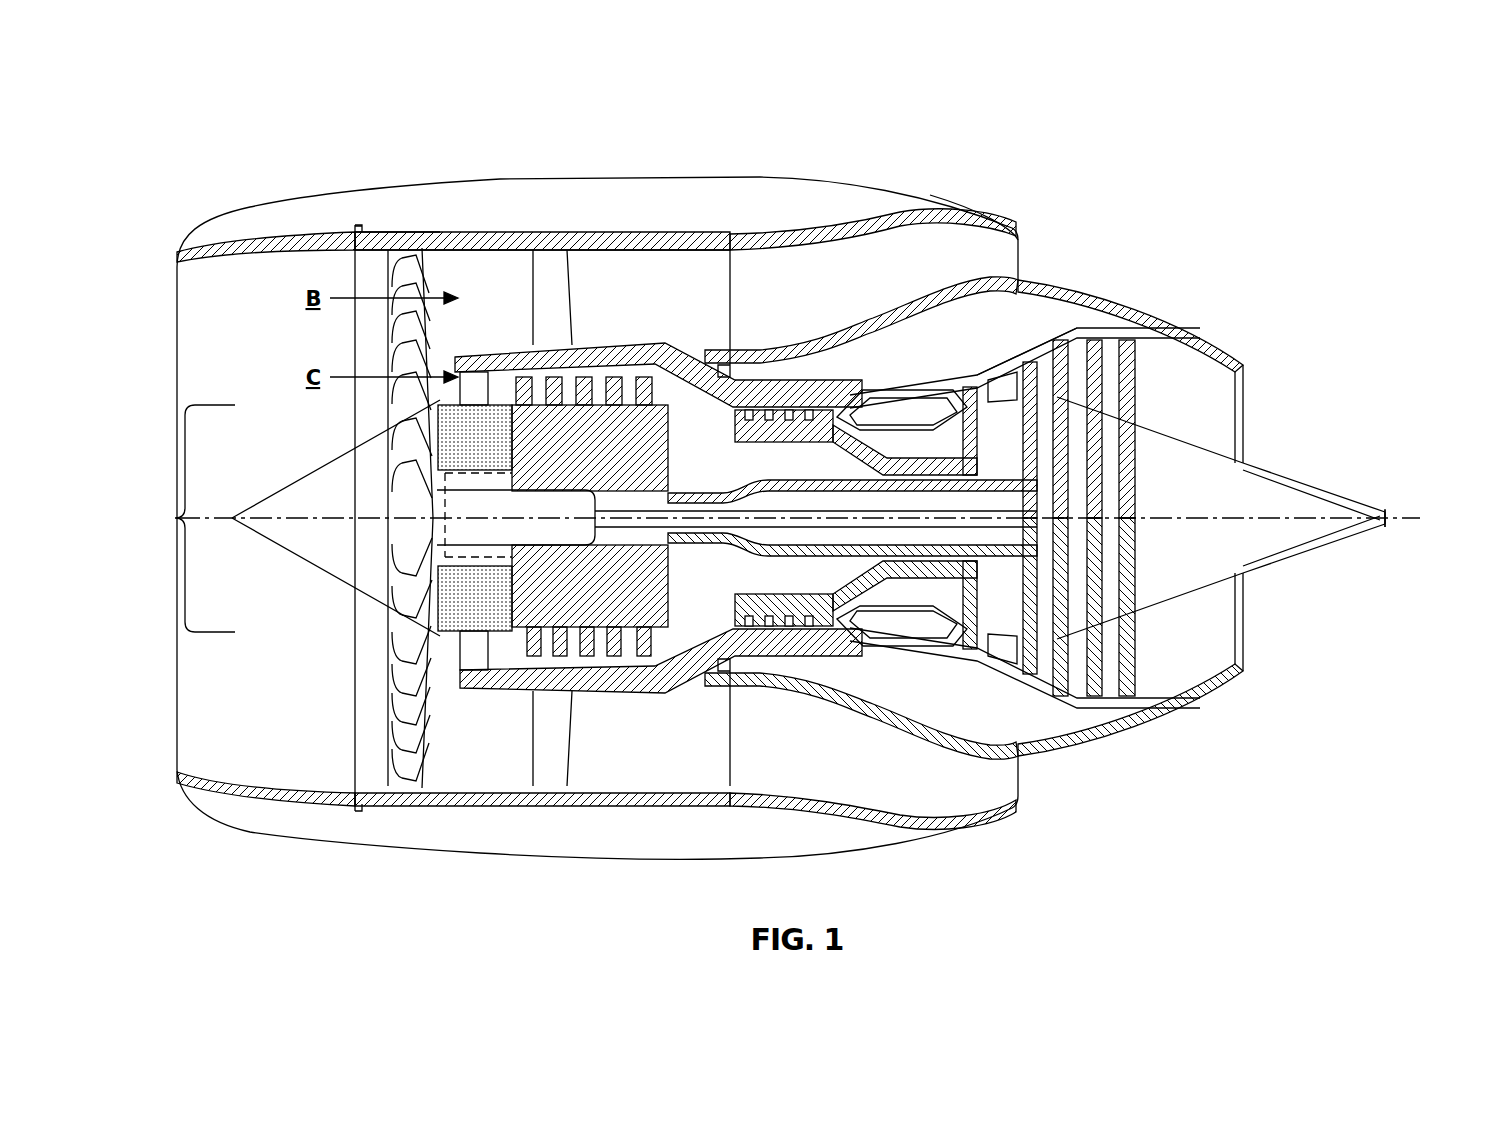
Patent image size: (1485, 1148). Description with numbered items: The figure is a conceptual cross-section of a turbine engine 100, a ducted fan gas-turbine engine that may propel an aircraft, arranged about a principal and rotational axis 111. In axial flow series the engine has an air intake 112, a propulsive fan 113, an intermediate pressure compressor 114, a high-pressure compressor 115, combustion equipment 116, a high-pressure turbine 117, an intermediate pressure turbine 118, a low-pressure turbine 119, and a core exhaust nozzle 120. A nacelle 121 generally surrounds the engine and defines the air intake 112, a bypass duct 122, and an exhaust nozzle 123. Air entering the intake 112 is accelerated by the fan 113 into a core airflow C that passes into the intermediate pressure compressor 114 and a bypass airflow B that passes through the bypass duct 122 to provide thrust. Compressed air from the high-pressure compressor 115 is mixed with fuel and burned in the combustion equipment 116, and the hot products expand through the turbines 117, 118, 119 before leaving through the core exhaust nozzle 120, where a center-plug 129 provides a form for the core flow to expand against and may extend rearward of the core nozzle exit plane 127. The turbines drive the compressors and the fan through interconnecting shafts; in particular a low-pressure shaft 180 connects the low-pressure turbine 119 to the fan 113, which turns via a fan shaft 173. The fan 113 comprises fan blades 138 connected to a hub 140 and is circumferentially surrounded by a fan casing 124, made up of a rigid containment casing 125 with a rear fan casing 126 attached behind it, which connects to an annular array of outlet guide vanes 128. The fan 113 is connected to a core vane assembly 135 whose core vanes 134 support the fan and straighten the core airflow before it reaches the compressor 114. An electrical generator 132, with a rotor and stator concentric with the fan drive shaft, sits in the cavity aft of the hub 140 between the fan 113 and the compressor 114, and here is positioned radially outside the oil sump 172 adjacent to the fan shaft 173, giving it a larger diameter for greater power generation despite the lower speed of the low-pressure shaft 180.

The turbine engine 100 is at (185, 92).
The principal and rotational axis 111 is at (1400, 518).
The air intake 112 is at (195, 360).
The propulsive fan 113 is at (372, 672).
The intermediate pressure compressor 114 is at (597, 684).
The high-pressure compressor 115 is at (783, 645).
The combustion equipment 116 is at (908, 640).
The high-pressure turbine 117 is at (965, 388).
The intermediate pressure turbine 118 is at (1017, 353).
The low-pressure turbine 119 is at (1080, 330).
The core exhaust nozzle 120 is at (1225, 352).
The nacelle 121 is at (272, 185).
The bypass duct 122 is at (821, 518).
The exhaust nozzle 123 is at (997, 218).
The fan casing 124 is at (569, 222).
The rigid containment casing 125 is at (410, 238).
The rear fan casing 126 is at (700, 232).
The core nozzle exit plane 127 is at (1245, 430).
The outlet guide vanes 128 is at (548, 302).
The center-plug 129 is at (1290, 478).
The electrical generator 132 is at (475, 518).
The core vanes 134 is at (455, 368).
The core vane assembly 135 is at (430, 628).
The fan blades 138 is at (410, 413).
The hub 140 is at (320, 475).
The oil sump 172 is at (565, 468).
The fan shaft 173 is at (530, 548).
The low-pressure shaft 180 is at (790, 510).